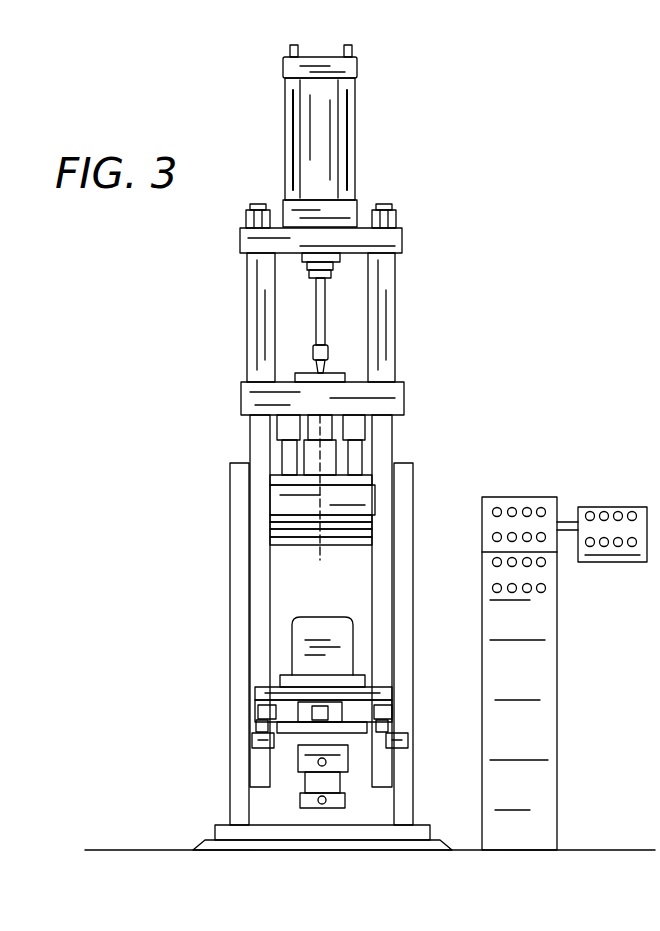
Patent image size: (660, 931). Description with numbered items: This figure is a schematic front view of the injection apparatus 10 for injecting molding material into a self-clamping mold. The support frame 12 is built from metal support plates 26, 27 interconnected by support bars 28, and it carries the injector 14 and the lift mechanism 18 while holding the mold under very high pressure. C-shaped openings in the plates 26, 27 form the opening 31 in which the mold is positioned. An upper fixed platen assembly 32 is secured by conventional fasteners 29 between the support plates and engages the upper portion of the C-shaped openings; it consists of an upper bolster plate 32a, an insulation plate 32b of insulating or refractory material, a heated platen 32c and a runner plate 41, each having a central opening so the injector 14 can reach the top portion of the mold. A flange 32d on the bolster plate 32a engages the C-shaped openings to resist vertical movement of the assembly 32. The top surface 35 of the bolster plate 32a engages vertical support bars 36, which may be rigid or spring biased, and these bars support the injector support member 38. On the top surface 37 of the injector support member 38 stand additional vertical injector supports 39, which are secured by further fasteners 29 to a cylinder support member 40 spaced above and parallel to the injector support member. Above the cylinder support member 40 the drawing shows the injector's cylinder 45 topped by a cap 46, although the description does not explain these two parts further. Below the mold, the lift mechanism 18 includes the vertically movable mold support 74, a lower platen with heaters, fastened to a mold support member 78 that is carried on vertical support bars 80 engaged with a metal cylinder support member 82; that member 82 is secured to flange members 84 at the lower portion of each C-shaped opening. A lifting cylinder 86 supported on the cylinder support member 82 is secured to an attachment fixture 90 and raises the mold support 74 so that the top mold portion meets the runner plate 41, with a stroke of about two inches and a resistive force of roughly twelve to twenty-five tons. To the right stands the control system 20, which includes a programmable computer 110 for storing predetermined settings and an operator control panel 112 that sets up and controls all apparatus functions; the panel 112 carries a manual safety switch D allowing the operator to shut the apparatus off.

The apparatus 10 is at (478, 138).
The support frame 12 is at (235, 570).
The injector 14 is at (210, 350).
The lift mechanism 18 is at (248, 678).
The control system 20 is at (565, 438).
The support plate 26 is at (240, 618).
The support plate 27 is at (404, 624).
The support bars 28 is at (245, 740).
The fasteners 29 is at (402, 222).
The opening 31 is at (358, 598).
The upper fixed platen assembly 32 is at (313, 550).
The upper bolster plate 32a is at (270, 518).
The insulation plate 32b is at (270, 533).
The heated platen 32c is at (270, 541).
The flange 32d is at (270, 525).
The top surface 35 is at (392, 452).
The vertical support bars 36 is at (385, 430).
The top surface 37 is at (396, 383).
The injector support member 38 is at (241, 402).
The vertical injector supports 39 is at (390, 318).
The cylinder support member 40 is at (240, 255).
The runner plate 41 is at (345, 543).
The hydraulic cylinder 45 is at (368, 140).
The cylinder cap 46 is at (360, 63).
The mold support 74 is at (310, 657).
The mold support member 78 is at (387, 670).
The vertical support bars 80 is at (257, 713).
The cylinder support member 82 is at (252, 730).
The flange members 84 is at (392, 752).
The lifting cylinder 86 is at (288, 795).
The attachment fixture 90 is at (385, 710).
The programmable computer 110 is at (515, 497).
The control panel 112 is at (598, 507).
The manual safety switch D is at (545, 592).